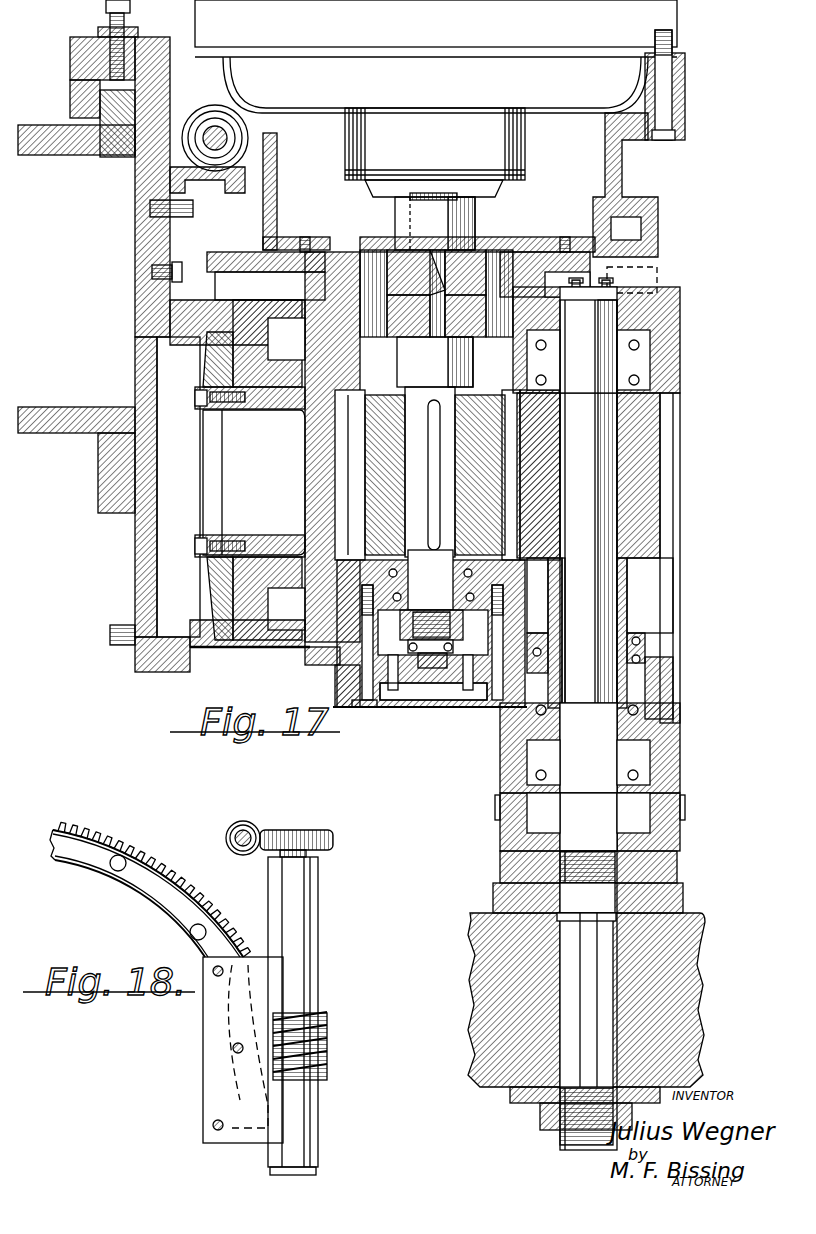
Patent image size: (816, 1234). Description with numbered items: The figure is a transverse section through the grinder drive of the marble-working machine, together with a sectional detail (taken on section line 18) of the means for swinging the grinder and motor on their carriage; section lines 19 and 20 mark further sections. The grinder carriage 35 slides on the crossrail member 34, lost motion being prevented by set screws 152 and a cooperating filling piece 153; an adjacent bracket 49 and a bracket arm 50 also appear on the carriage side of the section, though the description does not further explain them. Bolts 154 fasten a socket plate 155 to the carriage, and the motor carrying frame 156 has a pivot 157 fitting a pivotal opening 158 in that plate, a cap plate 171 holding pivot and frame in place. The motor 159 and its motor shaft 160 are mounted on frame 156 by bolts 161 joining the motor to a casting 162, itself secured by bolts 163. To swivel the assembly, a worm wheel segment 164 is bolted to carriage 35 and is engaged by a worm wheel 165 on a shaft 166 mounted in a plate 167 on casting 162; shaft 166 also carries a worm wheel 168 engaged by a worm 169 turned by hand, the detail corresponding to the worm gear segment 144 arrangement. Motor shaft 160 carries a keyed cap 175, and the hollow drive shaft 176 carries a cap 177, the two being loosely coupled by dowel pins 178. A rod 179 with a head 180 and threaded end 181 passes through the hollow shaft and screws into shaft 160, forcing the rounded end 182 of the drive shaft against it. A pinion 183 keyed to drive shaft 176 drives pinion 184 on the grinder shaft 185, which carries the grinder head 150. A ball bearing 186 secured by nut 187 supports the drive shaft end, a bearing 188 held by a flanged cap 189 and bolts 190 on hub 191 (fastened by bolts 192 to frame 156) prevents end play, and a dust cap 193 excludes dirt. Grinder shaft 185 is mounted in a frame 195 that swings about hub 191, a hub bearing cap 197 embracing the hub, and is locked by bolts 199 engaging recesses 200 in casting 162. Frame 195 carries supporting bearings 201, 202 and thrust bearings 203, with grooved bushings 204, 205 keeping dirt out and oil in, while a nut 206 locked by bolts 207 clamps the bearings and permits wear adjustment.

In FIG. 17, the set screws 152 is at (104, 6).
In FIG. 17, the filling piece 153 is at (88, 78).
In FIG. 17, the bracket 49 is at (72, 100).
In FIG. 17, the crossrail member 34 is at (60, 155).
In FIG. 17, the grinder carriage 35 is at (140, 353).
In FIG. 17, the bracket arm 50 is at (108, 453).
In FIG. 17, the worm wheel 165 is at (205, 108).
In FIG. 18, the worm wheel 165 is at (328, 1047).
In FIG. 17, the shaft 166 is at (228, 134).
In FIG. 18, the shaft 166 is at (302, 1168).
In FIG. 17, the plate 167 is at (278, 165).
In FIG. 18, the plate 167 is at (212, 1102).
In FIG. 17, the worm wheel segment 164 is at (228, 190).
In FIG. 17, the section line 18— 18 is at (262, 110).
In FIG. 17, the bolts 154 is at (170, 268).
In FIG. 17, the bolts 163 is at (305, 238).
In FIG. 17, the motor carrying frame 156 is at (262, 410).
In FIG. 17, the pivot 157 is at (278, 560).
In FIG. 17, the pivotal opening 158 is at (255, 540).
In FIG. 17, the cap plate 171 is at (215, 583).
In FIG. 17, the socket plate 155 is at (235, 646).
In FIG. 17, the nut 187 is at (318, 655).
In FIG. 17, the bearing 188 is at (340, 675).
In FIG. 17, the pinion 183 is at (350, 460).
In FIG. 17, the drive shaft 176 is at (395, 433).
In FIG. 17, the rod 179 is at (425, 495).
In FIG. 17, the cap 175 is at (436, 258).
In FIG. 17, the dowel pins 178 is at (375, 260).
In FIG. 17, the cap 177 is at (416, 293).
In FIG. 17, the threaded end 181 is at (448, 290).
In FIG. 17, the rounded end 182 is at (465, 293).
In FIG. 17, the motor 159 is at (436, 56).
In FIG. 17, the motor shaft 160 is at (440, 190).
In FIG. 17, the bolts 161 is at (686, 92).
In FIG. 17, the casting 162 is at (622, 165).
In FIG. 17, the recesses 200 is at (642, 228).
In FIG. 17, the section line 20— 20 is at (580, 255).
In FIG. 17, the bolts 207 is at (553, 252).
In FIG. 17, the bolts 199 is at (648, 278).
In FIG. 17, the nut 206 is at (610, 290).
In FIG. 17, the grooved bushing 205 is at (665, 300).
In FIG. 17, the supporting bearing 202 is at (680, 348).
In FIG. 17, the pinion 184 is at (665, 465).
In FIG. 17, the section line 19— 19 is at (330, 520).
In FIG. 17, the head 180 is at (435, 682).
In FIG. 17, the grinder shaft 185 is at (584, 633).
In FIG. 17, the ball bearing 186 is at (475, 595).
In FIG. 17, the bolts 192 is at (366, 706).
In FIG. 17, the hub 191 is at (358, 706).
In FIG. 17, the hub bearing cap 197 is at (335, 708).
In FIG. 17, the dust cap 193 is at (394, 683).
In FIG. 17, the flanged cap 189 is at (420, 692).
In FIG. 17, the bolts 190 is at (478, 683).
In FIG. 17, the grooved bushing 204 is at (660, 643).
In FIG. 17, the frame 195 is at (660, 730).
In FIG. 17, the thrust bearings 203 is at (548, 707).
In FIG. 17, the supporting bearing 201 is at (665, 822).
In FIG. 17, the grinder head 150 is at (706, 970).
In FIG. 18, the worm gear segment 144 is at (68, 820).
In FIG. 18, the worm 169 is at (245, 820).
In FIG. 18, the worm wheel 168 is at (334, 838).